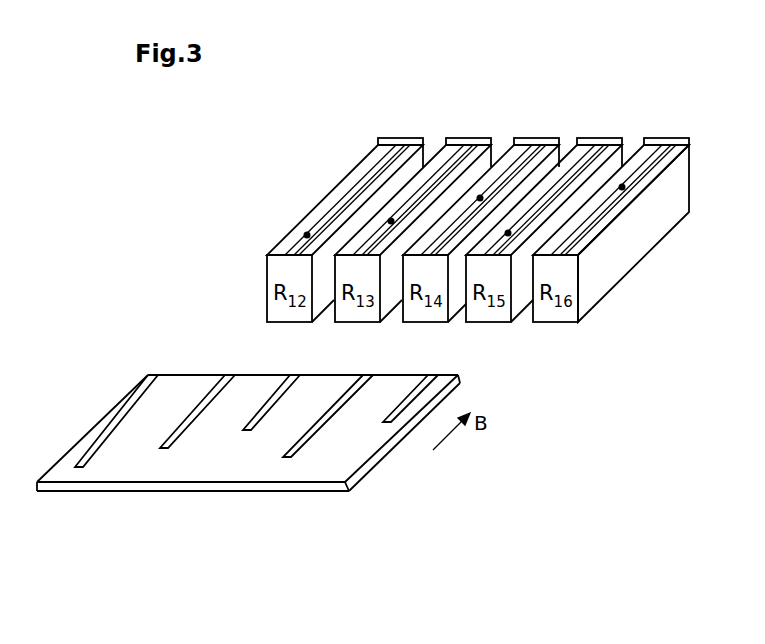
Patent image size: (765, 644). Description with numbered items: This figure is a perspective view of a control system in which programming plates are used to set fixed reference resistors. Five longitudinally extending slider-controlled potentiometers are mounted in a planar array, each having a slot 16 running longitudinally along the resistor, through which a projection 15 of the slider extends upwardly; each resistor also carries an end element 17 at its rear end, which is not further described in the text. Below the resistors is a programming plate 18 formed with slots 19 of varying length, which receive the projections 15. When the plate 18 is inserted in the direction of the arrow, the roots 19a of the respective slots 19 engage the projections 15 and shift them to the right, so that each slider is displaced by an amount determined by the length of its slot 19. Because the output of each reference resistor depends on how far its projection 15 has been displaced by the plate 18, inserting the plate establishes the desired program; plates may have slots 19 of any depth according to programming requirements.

The projection 15 is at (304, 235).
The slot 16 is at (358, 188).
The end cap / terminal plate of resistor block 17 is at (380, 138).
The programming plate 18 is at (137, 465).
The slots 19 is at (163, 378).
The roots 19a is at (295, 453).